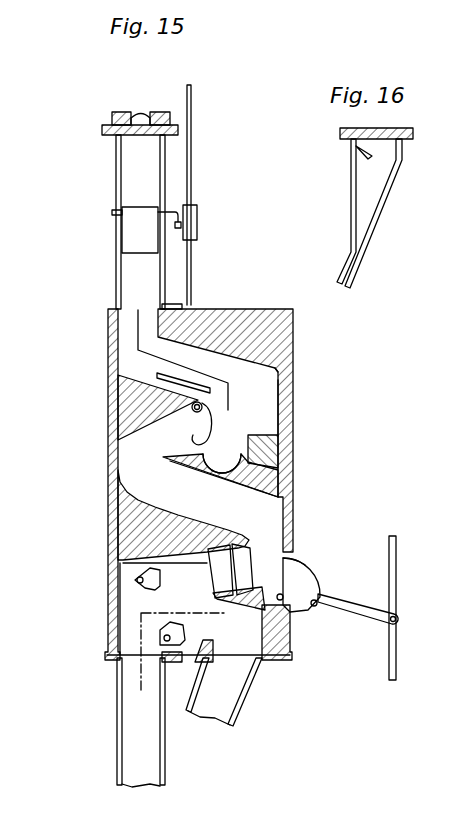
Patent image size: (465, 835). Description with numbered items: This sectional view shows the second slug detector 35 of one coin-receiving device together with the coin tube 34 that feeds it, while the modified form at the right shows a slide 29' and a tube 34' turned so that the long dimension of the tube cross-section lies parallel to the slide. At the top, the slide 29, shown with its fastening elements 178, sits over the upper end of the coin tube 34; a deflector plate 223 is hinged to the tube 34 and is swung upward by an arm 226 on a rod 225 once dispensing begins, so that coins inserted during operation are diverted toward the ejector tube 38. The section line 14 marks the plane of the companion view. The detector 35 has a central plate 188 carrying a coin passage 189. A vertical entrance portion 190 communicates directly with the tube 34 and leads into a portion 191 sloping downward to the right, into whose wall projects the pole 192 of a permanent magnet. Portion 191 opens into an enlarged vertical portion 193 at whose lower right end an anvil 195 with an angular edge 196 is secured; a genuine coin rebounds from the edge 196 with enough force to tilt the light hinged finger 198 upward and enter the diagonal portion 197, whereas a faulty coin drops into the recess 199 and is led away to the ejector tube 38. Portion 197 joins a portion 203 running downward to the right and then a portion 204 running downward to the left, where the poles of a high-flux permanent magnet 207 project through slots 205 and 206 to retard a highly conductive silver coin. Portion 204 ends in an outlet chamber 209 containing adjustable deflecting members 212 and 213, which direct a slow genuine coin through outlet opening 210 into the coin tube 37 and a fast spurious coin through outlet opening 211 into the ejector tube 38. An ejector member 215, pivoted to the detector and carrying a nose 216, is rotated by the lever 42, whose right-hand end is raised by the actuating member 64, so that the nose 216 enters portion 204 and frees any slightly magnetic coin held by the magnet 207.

In FIG. 15, the section line 14 is at (230, 600).
In FIG. 15, the slide 29 is at (114, 128).
In FIG. 16, the slide 29' is at (401, 122).
In FIG. 15, the coin tube 34 is at (103, 222).
In FIG. 16, the tube 34' is at (379, 213).
In FIG. 15, the slug-detecting device 35 is at (279, 304).
In FIG. 15, the coin tube 37 is at (130, 735).
In FIG. 15, the ejector tube 38 is at (222, 703).
In FIG. 15, the lever 42 is at (388, 610).
In FIG. 15, the actuating rod 64 is at (396, 556).
In FIG. 15, the fastening nuts 178 is at (115, 112).
In FIG. 15, the central plate 188 is at (282, 335).
In FIG. 15, the passage 189 is at (147, 470).
In FIG. 15, the vertical entrance portion 190 is at (128, 331).
In FIG. 15, the sloping portion 191 is at (273, 366).
In FIG. 15, the pole of permanent magnet 192 is at (162, 374).
In FIG. 15, the enlarged vertical portion 193 is at (262, 400).
In FIG. 15, the anvil 195 is at (262, 452).
In FIG. 15, the angular edge 196 is at (268, 432).
In FIG. 15, the diagonally extending portion 197 is at (133, 430).
In FIG. 15, the hinged finger 198 is at (193, 405).
In FIG. 15, the recess 199 is at (239, 455).
In FIG. 15, the passage portion 203 is at (272, 497).
In FIG. 15, the passage portion 204 is at (190, 565).
In FIG. 15, the slot 205 is at (208, 548).
In FIG. 15, the slot 206 is at (240, 550).
In FIG. 15, the permanent magnet 207 is at (245, 552).
In FIG. 15, the outlet chamber 209 is at (185, 602).
In FIG. 15, the outlet opening 210 is at (132, 645).
In FIG. 15, the outlet opening 211 is at (282, 646).
In FIG. 15, the deflecting member 212 is at (133, 580).
In FIG. 15, the deflecting member 213 is at (165, 630).
In FIG. 15, the ejector member 215 is at (305, 588).
In FIG. 15, the nose 216 is at (295, 565).
In FIG. 15, the deflector plate 223 is at (135, 233).
In FIG. 15, the rod 225 is at (190, 255).
In FIG. 15, the arm 226 is at (190, 223).